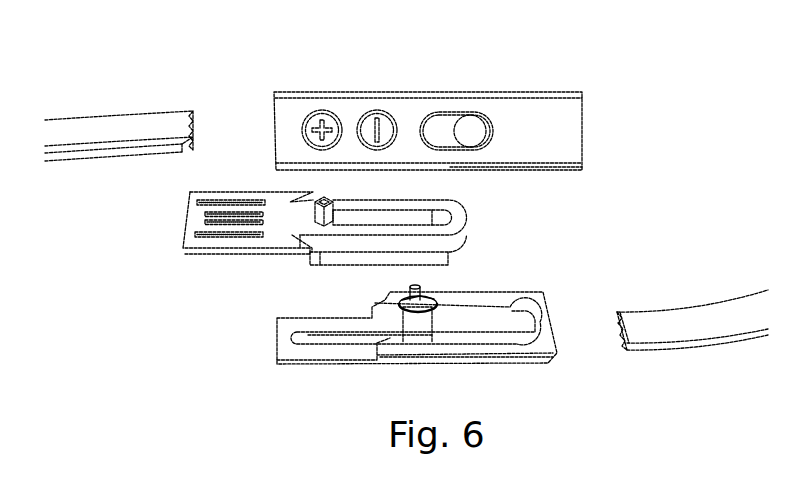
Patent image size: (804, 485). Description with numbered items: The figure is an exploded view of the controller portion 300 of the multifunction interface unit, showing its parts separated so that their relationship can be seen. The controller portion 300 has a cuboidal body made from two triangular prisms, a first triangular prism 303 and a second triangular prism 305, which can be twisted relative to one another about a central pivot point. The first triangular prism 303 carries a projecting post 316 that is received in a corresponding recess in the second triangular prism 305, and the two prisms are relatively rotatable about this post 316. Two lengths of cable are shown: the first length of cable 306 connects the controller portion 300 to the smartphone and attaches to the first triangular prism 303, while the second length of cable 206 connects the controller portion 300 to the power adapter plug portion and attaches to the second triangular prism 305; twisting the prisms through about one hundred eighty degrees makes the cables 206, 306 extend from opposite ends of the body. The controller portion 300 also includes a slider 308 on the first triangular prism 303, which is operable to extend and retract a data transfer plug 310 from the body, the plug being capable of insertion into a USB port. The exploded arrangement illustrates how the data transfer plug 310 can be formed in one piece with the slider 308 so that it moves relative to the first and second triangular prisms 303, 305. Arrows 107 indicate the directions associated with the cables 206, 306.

The controller portion 300 is at (660, 75).
The second length of cable 206 is at (113, 118).
The band attachment direction 107 is at (88, 172).
The second triangular prism 305 is at (528, 118).
The data transfer plug 310 is at (240, 248).
The slider 308 is at (462, 235).
The first triangular prism 303 is at (537, 360).
The projecting post 316 is at (413, 325).
The first length of cable 306 is at (668, 323).